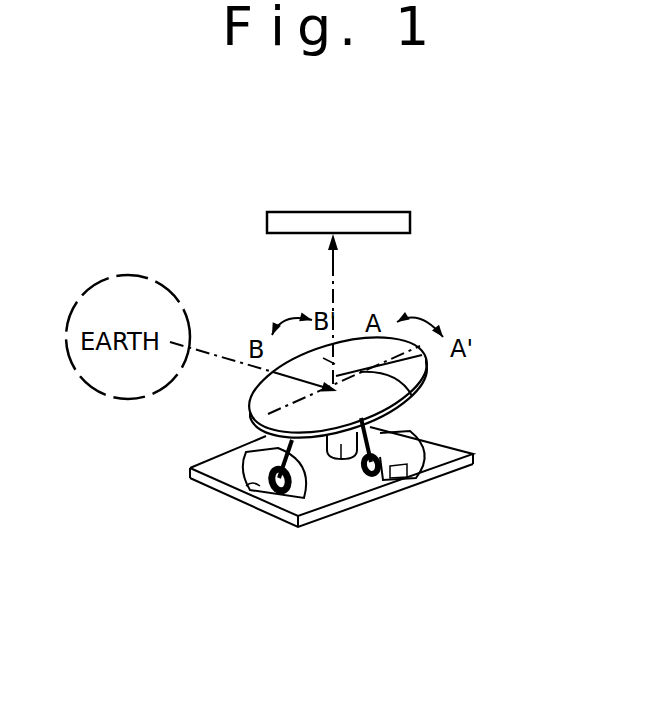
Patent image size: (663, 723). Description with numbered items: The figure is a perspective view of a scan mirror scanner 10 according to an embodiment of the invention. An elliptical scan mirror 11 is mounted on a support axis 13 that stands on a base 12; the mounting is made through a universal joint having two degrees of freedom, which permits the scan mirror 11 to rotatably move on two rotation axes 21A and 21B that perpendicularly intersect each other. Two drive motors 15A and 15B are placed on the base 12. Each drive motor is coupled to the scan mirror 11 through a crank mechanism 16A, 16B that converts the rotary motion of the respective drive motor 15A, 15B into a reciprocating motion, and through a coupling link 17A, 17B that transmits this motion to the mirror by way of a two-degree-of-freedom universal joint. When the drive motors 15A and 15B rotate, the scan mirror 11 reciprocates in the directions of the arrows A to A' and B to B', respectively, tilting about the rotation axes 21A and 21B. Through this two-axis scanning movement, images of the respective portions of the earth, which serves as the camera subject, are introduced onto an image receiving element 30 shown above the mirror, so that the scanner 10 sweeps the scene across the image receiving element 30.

The scan mirror scanner 10 is at (452, 285).
The elliptical scan mirror 11 is at (424, 356).
The base 12 is at (443, 452).
The support axis 13 is at (341, 460).
The drive motor 15A is at (413, 480).
The drive motor 15B is at (215, 490).
The crank mechanism 16A is at (373, 478).
The crank mechanism 16B is at (285, 495).
The coupling link 17A is at (375, 432).
The coupling link 17B is at (291, 500).
The rotation axis 21A is at (418, 392).
The rotation axis 21B is at (323, 358).
The image receiving element 30 is at (382, 218).